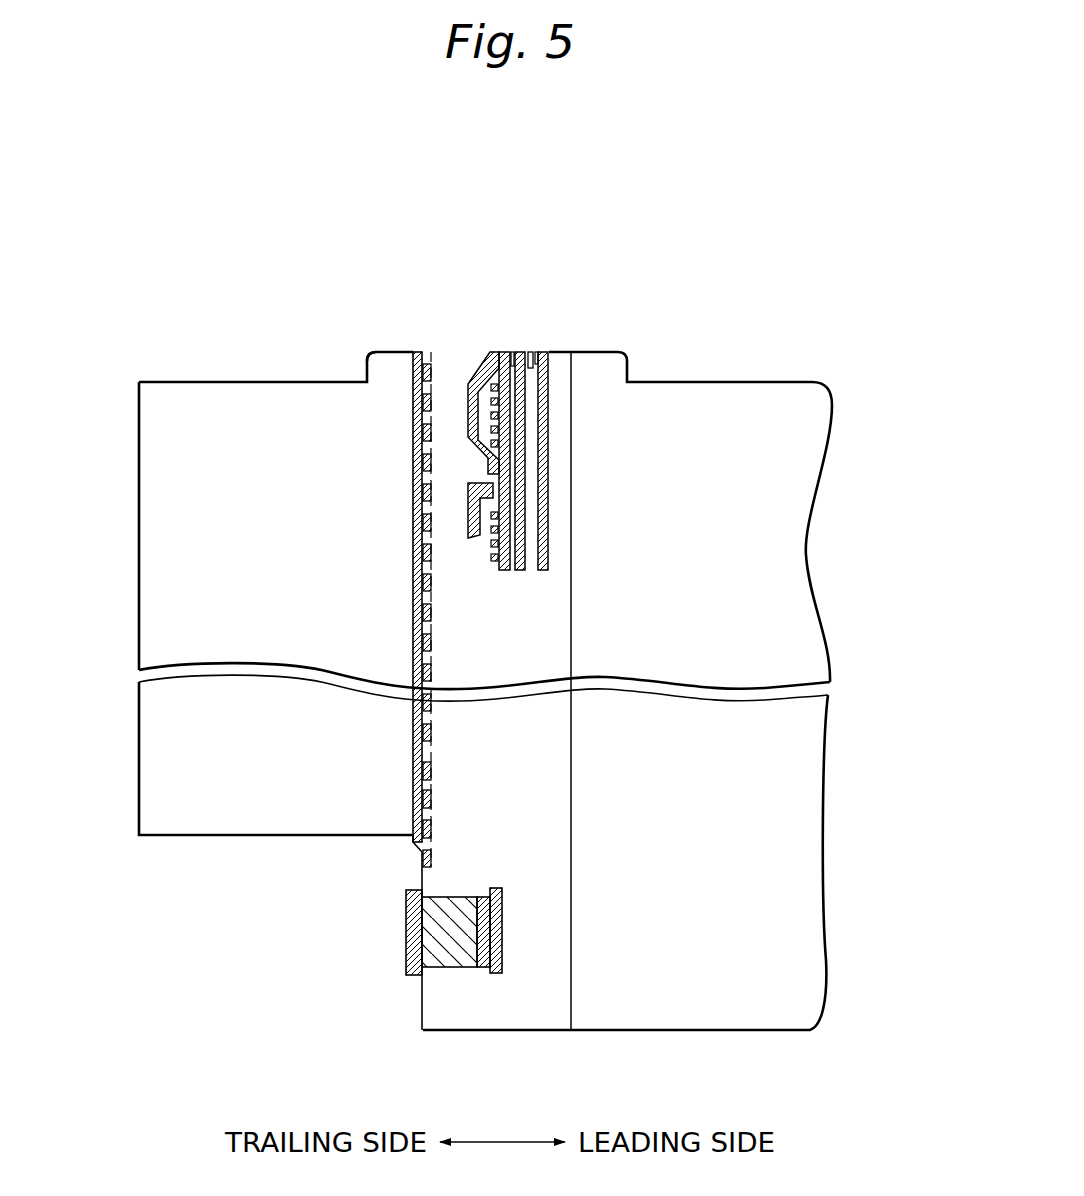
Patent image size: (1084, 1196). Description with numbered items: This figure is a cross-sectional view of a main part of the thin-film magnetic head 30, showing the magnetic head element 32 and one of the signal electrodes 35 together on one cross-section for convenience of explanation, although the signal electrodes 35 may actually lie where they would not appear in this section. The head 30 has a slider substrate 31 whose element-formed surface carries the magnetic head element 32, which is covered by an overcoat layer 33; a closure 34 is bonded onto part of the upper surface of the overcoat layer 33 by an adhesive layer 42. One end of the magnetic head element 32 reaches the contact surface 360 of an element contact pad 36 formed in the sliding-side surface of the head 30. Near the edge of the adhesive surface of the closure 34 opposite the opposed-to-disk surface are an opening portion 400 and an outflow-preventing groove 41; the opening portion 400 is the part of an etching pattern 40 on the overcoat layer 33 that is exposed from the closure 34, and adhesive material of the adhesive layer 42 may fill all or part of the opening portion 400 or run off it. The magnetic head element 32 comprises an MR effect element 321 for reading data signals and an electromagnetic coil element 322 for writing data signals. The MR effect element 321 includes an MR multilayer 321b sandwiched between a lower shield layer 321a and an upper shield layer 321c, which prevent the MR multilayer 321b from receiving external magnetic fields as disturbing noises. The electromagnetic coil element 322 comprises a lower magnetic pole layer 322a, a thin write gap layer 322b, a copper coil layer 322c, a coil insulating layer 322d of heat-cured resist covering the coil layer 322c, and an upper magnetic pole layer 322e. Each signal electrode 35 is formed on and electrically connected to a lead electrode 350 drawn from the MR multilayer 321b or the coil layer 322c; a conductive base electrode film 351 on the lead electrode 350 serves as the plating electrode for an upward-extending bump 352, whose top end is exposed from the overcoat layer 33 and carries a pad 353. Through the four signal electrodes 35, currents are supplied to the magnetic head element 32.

The thin-film magnetic head 30 is at (845, 450).
The slider substrate 31 is at (778, 407).
The magnetic head element 32 is at (680, 157).
The overcoat layer 33 is at (545, 622).
The closure 34 is at (165, 450).
The signal electrode 35 is at (307, 950).
The element contact pad 36 is at (352, 347).
The contact surface 360 is at (383, 350).
The etching pattern 40 is at (440, 793).
The outflow-preventing groove 41 is at (415, 858).
The adhesive layer 42 is at (412, 755).
The opening portion 400 is at (410, 827).
The MR effect element 321 is at (723, 218).
The lower shield layer 321a is at (546, 352).
The MR multilayer 321b is at (537, 352).
The upper shield layer 321c is at (530, 352).
The electromagnetic coil element 322 is at (353, 218).
The lower magnetic pole layer 322a is at (518, 352).
The write gap layer 322b is at (503, 352).
The coil layer 322c is at (472, 376).
The coil insulating layer 322d is at (468, 407).
The upper magnetic pole layer 322e is at (425, 382).
The lead electrode 350 is at (492, 975).
The base electrode film 351 is at (480, 967).
The bump 352 is at (445, 950).
The pad 353 is at (406, 940).